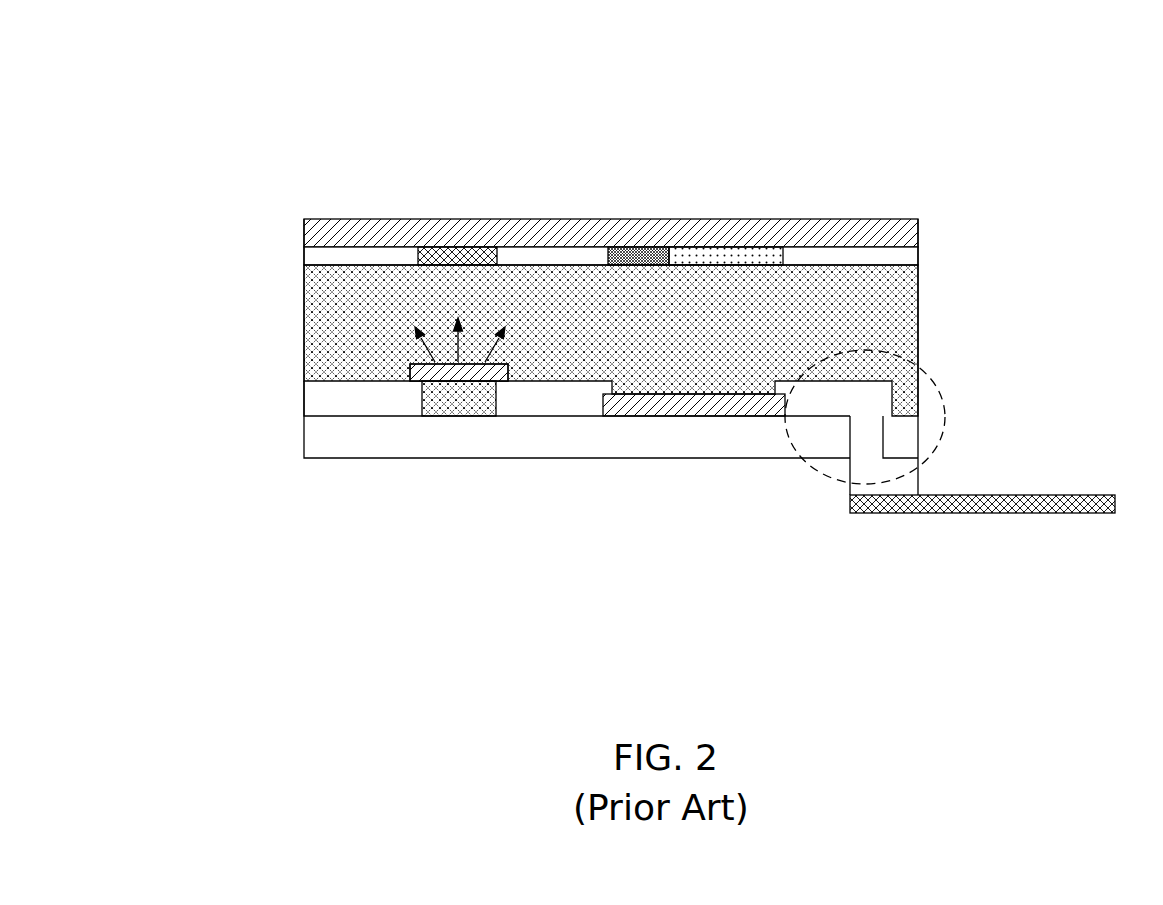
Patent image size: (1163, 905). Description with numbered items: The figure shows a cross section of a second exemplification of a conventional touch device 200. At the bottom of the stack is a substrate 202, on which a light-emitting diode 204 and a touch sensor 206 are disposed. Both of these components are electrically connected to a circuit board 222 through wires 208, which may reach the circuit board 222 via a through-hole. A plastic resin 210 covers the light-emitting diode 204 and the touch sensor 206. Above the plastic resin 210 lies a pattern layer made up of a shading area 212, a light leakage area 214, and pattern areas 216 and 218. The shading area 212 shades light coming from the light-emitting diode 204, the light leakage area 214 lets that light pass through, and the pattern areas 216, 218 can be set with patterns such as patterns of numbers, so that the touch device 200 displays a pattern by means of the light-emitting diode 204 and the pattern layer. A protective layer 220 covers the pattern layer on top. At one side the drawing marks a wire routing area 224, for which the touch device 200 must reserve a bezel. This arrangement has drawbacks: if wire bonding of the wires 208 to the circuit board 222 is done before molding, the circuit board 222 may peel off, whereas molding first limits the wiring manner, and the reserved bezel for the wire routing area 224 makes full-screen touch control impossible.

The touch device 200 is at (1070, 118).
The substrate 202 is at (545, 452).
The light-emitting diode 204 is at (414, 372).
The touch sensor 206 is at (697, 406).
The wires 208 is at (325, 402).
The plastic resin 210 is at (325, 318).
The shading area 212 is at (312, 256).
The light leakage area 214 is at (432, 262).
The pattern area 216 is at (632, 262).
The pattern area 218 is at (742, 260).
The protective layer 220 is at (365, 230).
The circuit board 222 is at (1058, 506).
The wire routing area 224 is at (945, 404).